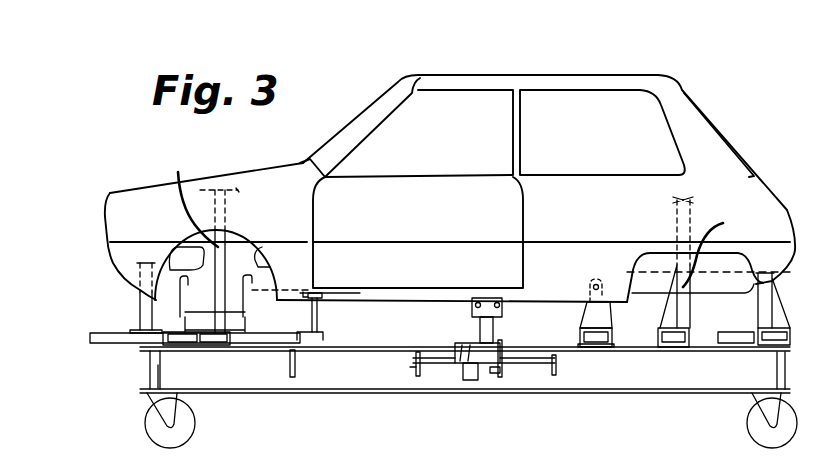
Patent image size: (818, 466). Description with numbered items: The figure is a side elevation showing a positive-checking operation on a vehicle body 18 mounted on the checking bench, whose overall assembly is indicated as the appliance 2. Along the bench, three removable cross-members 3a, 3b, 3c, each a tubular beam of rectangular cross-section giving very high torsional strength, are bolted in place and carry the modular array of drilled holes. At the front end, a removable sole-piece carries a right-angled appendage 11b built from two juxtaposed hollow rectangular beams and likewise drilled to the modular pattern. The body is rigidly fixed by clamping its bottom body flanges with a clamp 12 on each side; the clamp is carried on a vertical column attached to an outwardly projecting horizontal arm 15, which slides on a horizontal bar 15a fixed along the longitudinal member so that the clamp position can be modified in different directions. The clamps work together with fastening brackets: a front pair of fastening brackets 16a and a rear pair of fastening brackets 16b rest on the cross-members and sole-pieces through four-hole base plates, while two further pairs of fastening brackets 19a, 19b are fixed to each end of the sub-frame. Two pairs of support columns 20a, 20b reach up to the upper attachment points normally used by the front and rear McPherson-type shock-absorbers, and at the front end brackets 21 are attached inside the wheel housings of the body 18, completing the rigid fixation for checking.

The vehicle body 2 is at (461, 188).
The removable cross-member 3a is at (608, 333).
The removable cross-member 3b is at (689, 337).
The removable cross-member 3c is at (803, 333).
The appendage 11b is at (98, 338).
The clamp 12 is at (475, 308).
The horizontal arm 15 is at (470, 353).
The horizontal bar 15a is at (437, 367).
The fastening bracket 16a is at (318, 312).
The fastening bracket 16b is at (588, 313).
The vehicle body 18 is at (292, 179).
The fastening bracket 19a is at (150, 298).
The fastening bracket 19b is at (770, 292).
The support column 20a is at (189, 200).
The support column 20b is at (724, 249).
The bracket 21 is at (248, 302).